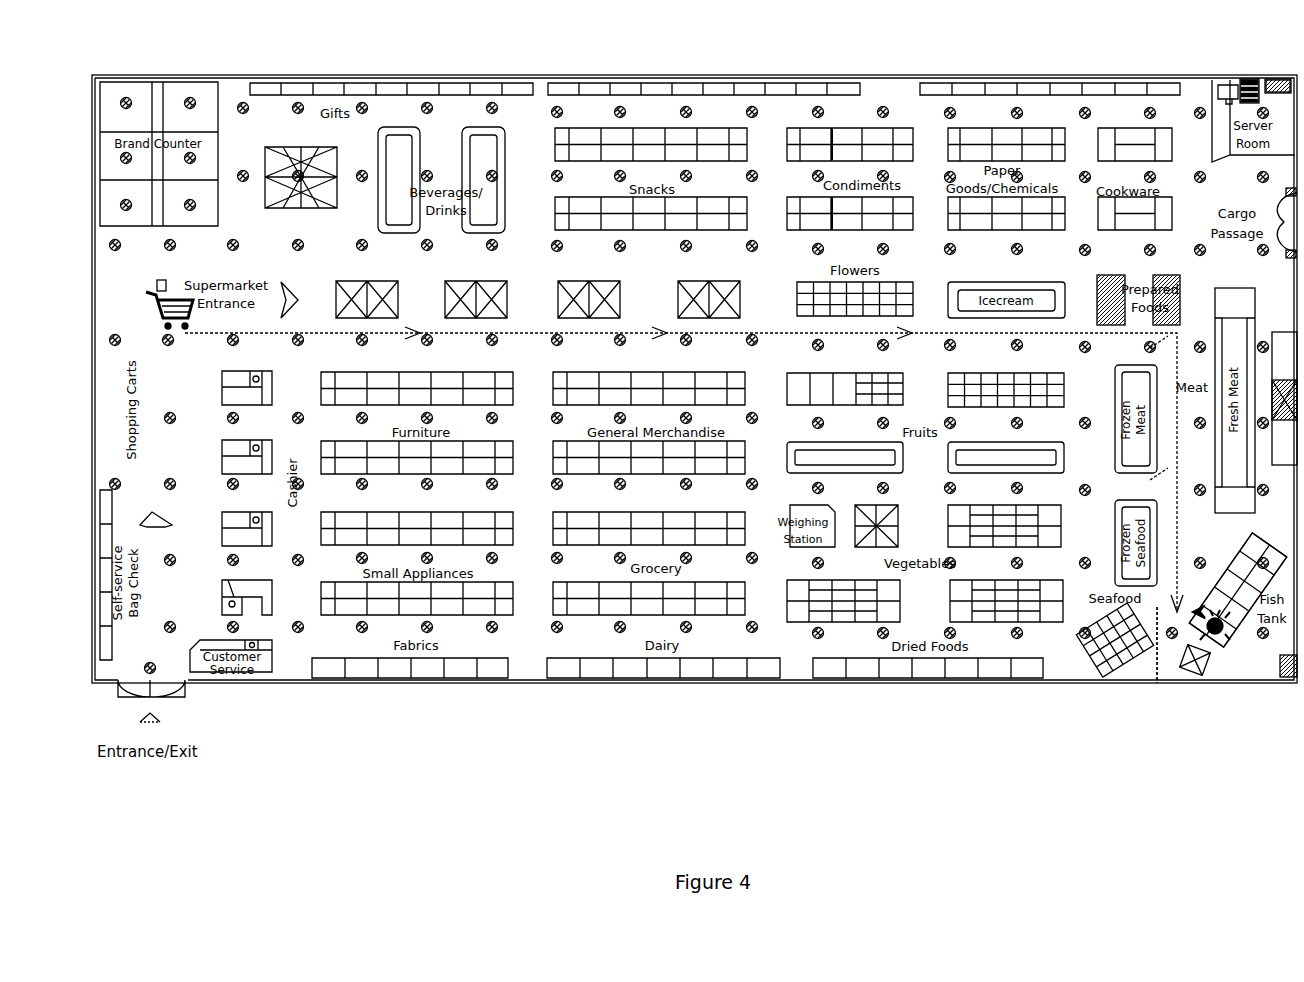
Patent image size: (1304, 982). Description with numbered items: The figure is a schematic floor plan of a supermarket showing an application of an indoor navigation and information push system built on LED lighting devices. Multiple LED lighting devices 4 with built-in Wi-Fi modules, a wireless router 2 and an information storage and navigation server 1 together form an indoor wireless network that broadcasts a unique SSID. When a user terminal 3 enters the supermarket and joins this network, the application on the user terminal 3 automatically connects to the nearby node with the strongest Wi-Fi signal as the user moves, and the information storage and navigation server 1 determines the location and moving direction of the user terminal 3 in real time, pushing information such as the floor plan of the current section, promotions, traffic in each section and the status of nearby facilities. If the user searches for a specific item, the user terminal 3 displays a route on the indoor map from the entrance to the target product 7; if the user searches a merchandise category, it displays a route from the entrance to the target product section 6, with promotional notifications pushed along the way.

The information storage and navigation server 1 is at (1248, 78).
The wireless router 2 is at (1277, 80).
The user terminal 3 is at (155, 285).
The LED lighting device 4 is at (144, 668).
The target product section 6 is at (1157, 683).
The target product 7 is at (1218, 645).